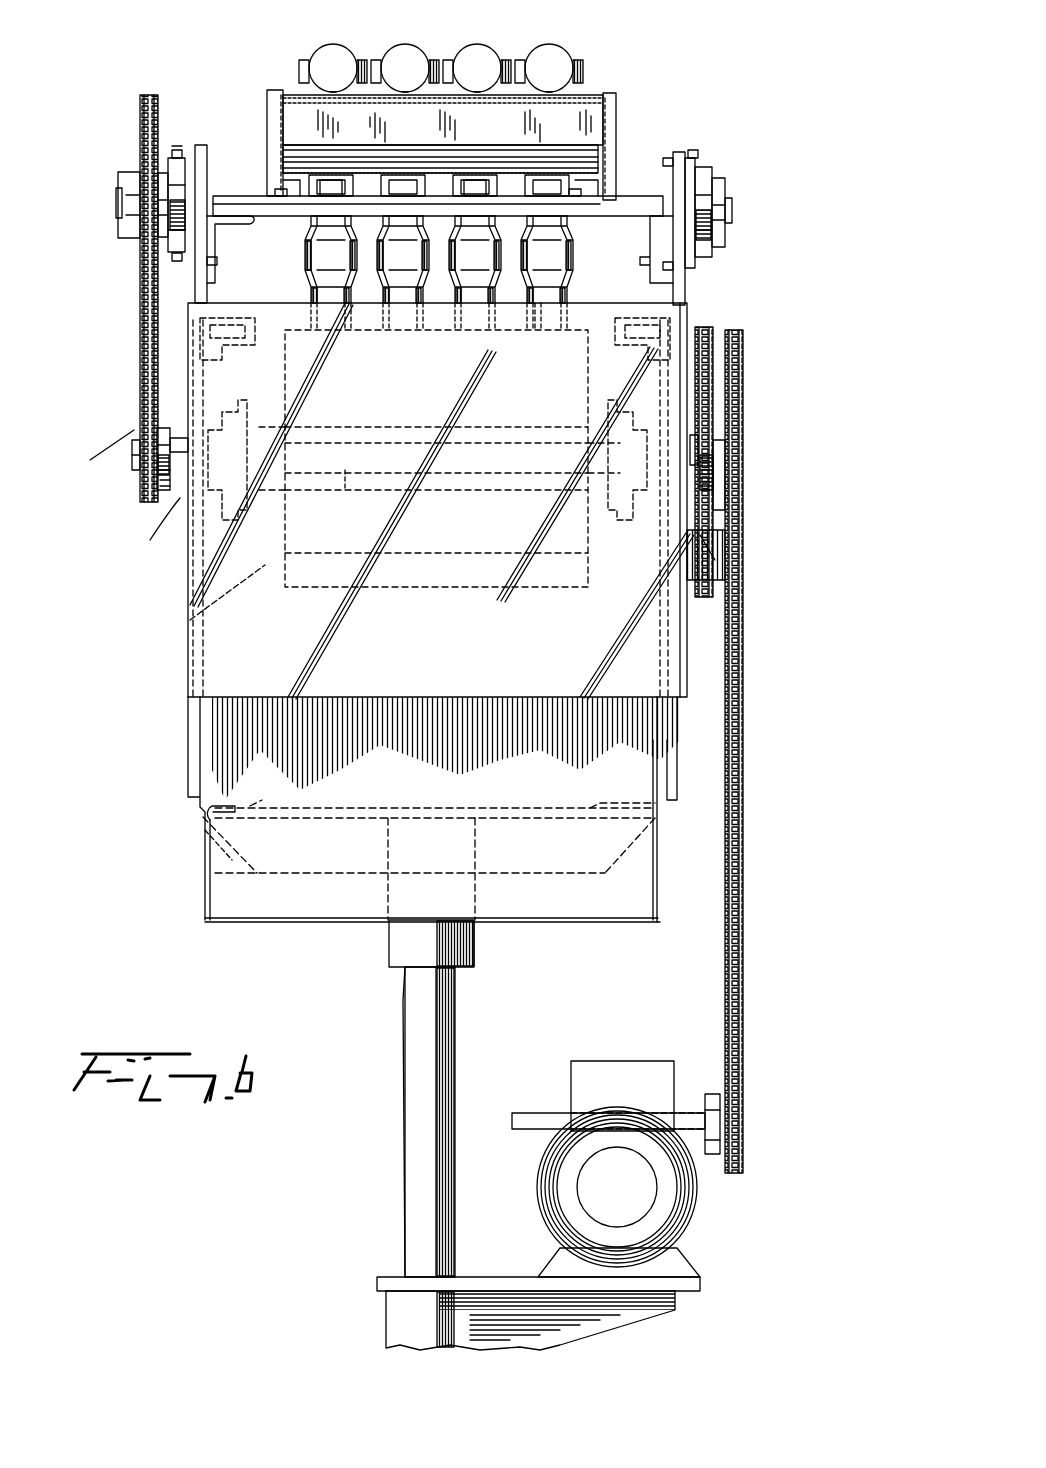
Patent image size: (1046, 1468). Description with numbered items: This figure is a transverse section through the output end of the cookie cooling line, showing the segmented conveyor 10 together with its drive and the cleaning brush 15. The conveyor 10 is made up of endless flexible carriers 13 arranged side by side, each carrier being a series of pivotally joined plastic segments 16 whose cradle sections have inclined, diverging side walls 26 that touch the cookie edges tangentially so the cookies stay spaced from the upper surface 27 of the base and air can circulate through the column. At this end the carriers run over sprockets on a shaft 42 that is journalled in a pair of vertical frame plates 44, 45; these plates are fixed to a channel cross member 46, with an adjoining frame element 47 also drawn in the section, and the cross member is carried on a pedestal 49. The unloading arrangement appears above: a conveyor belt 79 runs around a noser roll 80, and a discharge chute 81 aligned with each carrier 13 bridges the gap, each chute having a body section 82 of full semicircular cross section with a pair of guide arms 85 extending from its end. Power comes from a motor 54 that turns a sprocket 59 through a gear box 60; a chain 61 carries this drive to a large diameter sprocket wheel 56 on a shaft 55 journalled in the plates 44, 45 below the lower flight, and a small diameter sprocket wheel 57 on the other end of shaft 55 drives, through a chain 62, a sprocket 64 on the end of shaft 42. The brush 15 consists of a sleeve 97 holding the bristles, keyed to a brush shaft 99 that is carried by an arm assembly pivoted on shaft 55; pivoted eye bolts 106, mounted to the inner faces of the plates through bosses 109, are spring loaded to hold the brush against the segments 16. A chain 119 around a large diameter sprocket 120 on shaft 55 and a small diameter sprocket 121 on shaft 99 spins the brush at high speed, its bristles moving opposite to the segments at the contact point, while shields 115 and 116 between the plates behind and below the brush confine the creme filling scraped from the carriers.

The segmented conveyor 10 is at (575, 262).
The flexible carrier 13 is at (300, 252).
The cylindrical brush 15 is at (190, 600).
The plastic segment 16 is at (557, 294).
The side wall 26 is at (350, 287).
The upper surface 27 is at (543, 300).
The shaft 42 is at (237, 196).
The frame plate 44 is at (672, 740).
The frame plate 45 is at (188, 768).
The channel cross member 46 is at (203, 873).
The housing flange 47 is at (665, 795).
The pedestal 49 is at (405, 1052).
The motor 54 is at (690, 1195).
The shaft 55 is at (182, 485).
The large diameter sprocket wheel 56 is at (735, 402).
The small diameter sprocket wheel 57 is at (135, 462).
The sprocket 59 is at (722, 1112).
The gear box 60 is at (625, 1065).
The chain 61 is at (742, 800).
The chain 62 is at (140, 415).
The sprocket 64 is at (140, 133).
The conveyor belt 79 is at (285, 95).
The noser roll 80 is at (590, 100).
The discharge chute 81 is at (596, 62).
The body section 82 is at (408, 90).
The guide arm 85 is at (303, 66).
The sleeve 97 is at (315, 425).
The shaft 99 is at (347, 478).
The pivoted eye bolt 106 is at (185, 370).
The boss 109 is at (222, 312).
The shield 115 is at (215, 652).
The shield 116 is at (288, 892).
The chain 119 is at (710, 548).
The large diameter sprocket 120 is at (712, 330).
The small diameter sprocket 121 is at (700, 455).